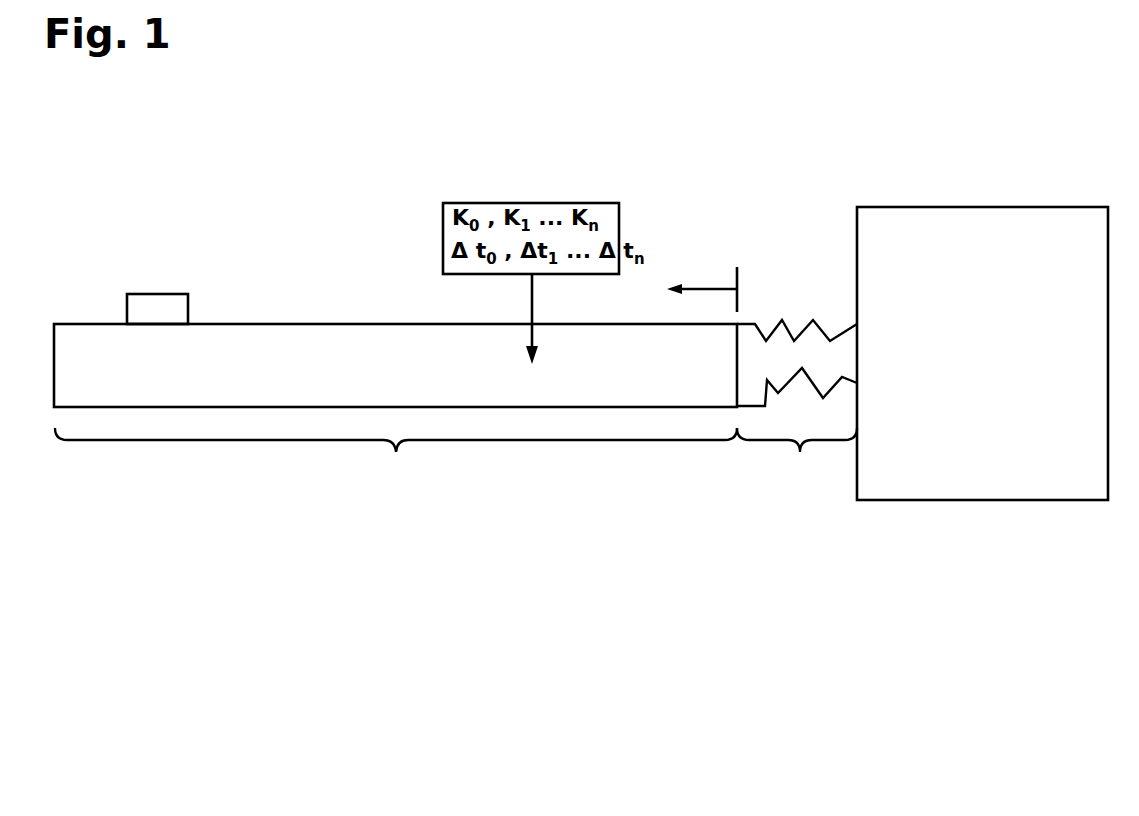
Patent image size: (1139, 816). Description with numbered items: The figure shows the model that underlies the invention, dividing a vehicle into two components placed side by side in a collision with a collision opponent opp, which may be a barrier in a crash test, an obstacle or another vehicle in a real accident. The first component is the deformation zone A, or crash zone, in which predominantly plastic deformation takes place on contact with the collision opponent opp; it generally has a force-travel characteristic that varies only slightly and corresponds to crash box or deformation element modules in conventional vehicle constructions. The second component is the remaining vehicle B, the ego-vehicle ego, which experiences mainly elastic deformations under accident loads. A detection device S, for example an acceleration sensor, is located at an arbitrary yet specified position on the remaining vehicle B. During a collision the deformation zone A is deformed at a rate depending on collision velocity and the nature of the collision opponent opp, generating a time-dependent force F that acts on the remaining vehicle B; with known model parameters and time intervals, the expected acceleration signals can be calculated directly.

The ego-vehicle ego is at (316, 283).
The collision opponent opp is at (968, 191).
The detection device S is at (155, 294).
The force F is at (709, 289).
The deformation zone A is at (797, 457).
The remaining vehicle B is at (396, 457).